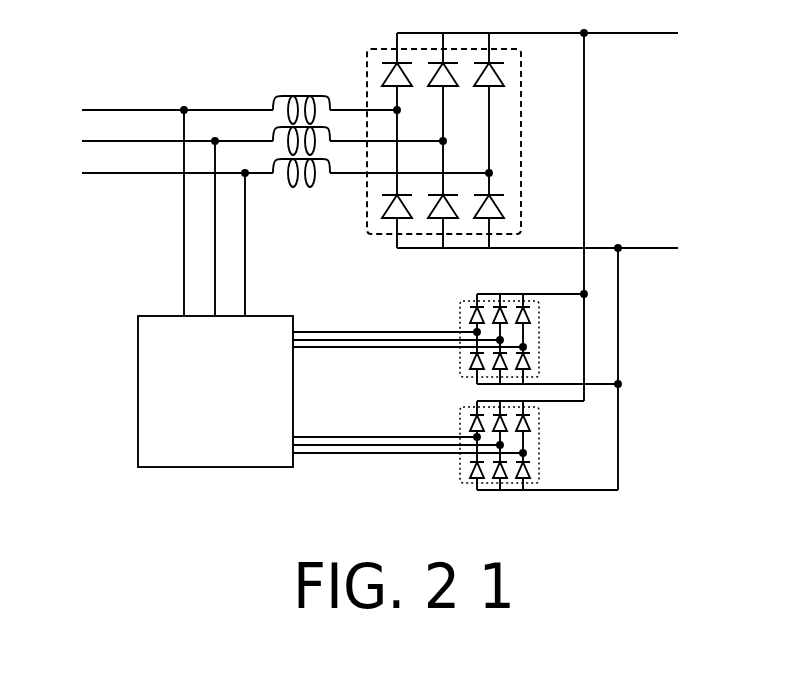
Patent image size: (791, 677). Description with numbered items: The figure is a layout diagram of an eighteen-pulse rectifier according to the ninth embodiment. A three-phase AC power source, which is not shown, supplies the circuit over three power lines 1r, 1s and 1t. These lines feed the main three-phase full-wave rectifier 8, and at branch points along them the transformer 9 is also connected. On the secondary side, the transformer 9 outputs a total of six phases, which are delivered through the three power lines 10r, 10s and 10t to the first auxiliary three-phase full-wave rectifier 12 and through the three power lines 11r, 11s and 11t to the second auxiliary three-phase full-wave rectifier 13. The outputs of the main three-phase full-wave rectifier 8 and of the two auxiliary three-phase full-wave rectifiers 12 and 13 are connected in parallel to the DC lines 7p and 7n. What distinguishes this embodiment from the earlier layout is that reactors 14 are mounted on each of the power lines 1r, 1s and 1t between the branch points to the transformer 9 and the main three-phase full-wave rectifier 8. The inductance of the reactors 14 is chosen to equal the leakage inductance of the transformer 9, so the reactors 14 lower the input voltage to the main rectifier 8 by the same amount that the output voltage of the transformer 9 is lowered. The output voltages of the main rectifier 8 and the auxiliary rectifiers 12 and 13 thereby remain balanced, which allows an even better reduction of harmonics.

The power line 1r is at (241, 202).
The power line 1s is at (264, 217).
The power line 1t is at (287, 232).
The reactors 14 is at (301, 125).
The main three-phase full-wave rectifier 8 is at (430, 140).
The DC line 7p is at (537, 200).
The DC line 7n is at (537, 356).
The transformer 9 is at (215, 391).
The power line 10r is at (386, 320).
The power line 10s is at (353, 341).
The power line 10t is at (409, 359).
The power line 11r is at (386, 425).
The power line 11s is at (347, 446).
The power line 11t is at (409, 466).
The auxiliary three-phase full-wave rectifier 12 is at (525, 335).
The auxiliary three-phase full-wave rectifier 13 is at (524, 443).